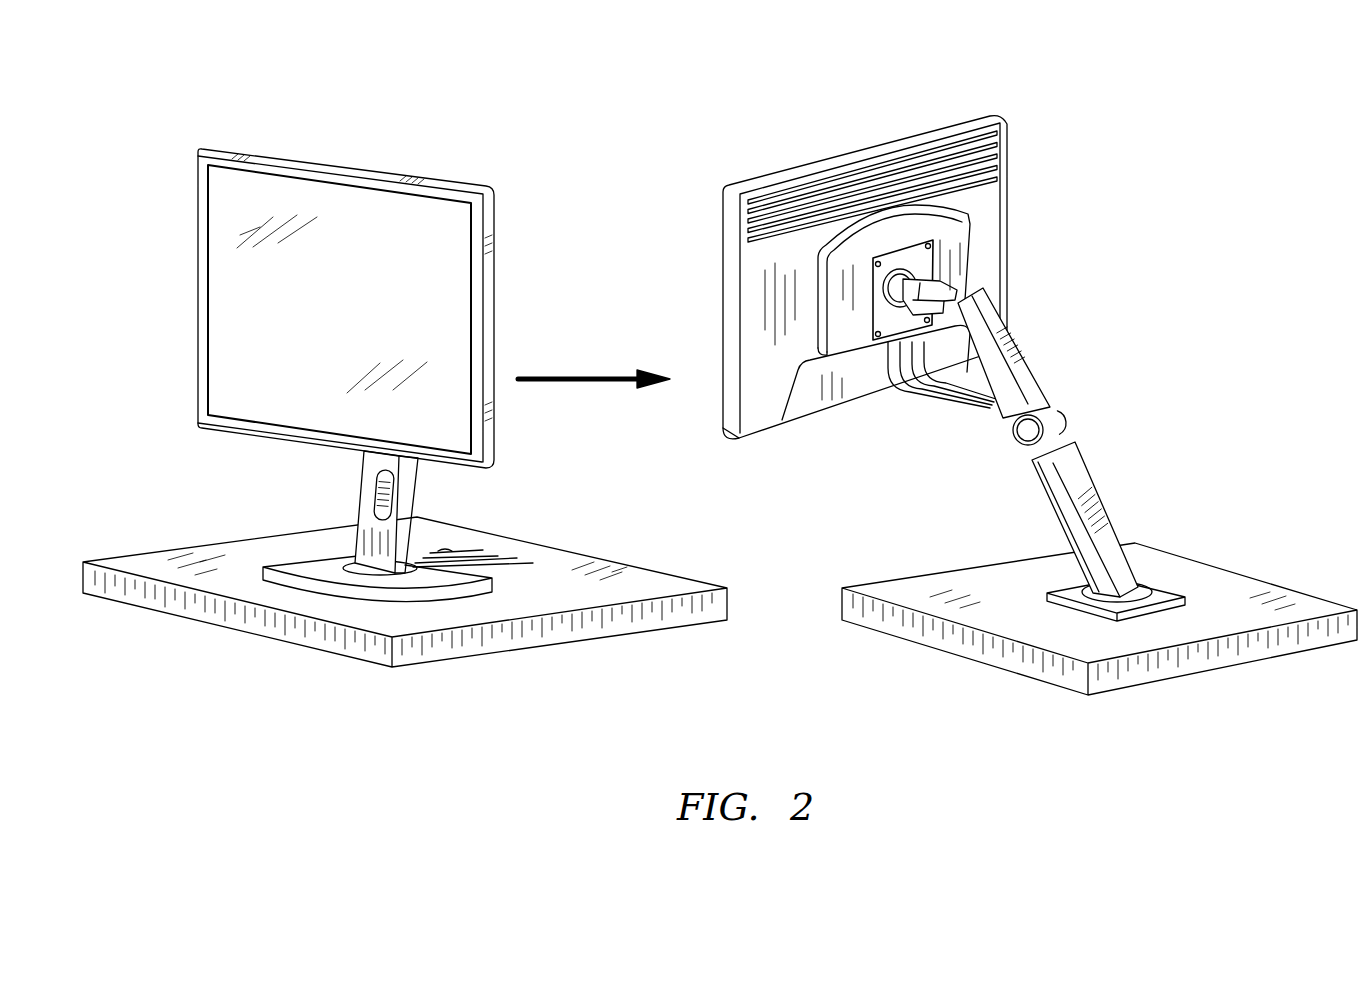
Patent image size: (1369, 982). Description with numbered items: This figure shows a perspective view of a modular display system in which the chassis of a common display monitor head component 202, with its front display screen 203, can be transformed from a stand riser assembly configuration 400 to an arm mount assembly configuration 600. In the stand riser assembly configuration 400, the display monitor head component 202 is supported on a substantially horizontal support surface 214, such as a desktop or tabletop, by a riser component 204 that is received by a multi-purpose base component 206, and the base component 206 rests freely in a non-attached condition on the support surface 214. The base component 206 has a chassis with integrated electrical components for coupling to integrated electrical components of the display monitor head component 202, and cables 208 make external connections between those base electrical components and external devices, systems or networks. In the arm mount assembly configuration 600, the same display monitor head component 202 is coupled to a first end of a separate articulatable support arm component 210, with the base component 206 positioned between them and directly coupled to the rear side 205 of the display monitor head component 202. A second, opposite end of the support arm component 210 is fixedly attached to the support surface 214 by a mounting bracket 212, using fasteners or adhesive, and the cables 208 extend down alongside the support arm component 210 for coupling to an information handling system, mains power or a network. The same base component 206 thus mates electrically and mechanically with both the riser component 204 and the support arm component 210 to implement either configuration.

The display monitor head component 202 is at (305, 161).
The display screen 203 is at (245, 320).
The riser component 204 is at (365, 512).
The rear side 205 is at (997, 257).
The base component 206 is at (282, 565).
The cables 208 is at (523, 568).
The support arm component 210 is at (1080, 480).
The mounting bracket 212 is at (1178, 588).
The support surface 214 is at (587, 565).
The stand riser assembly configuration 400 is at (148, 163).
The arm mount assembly configuration 600 is at (1118, 133).